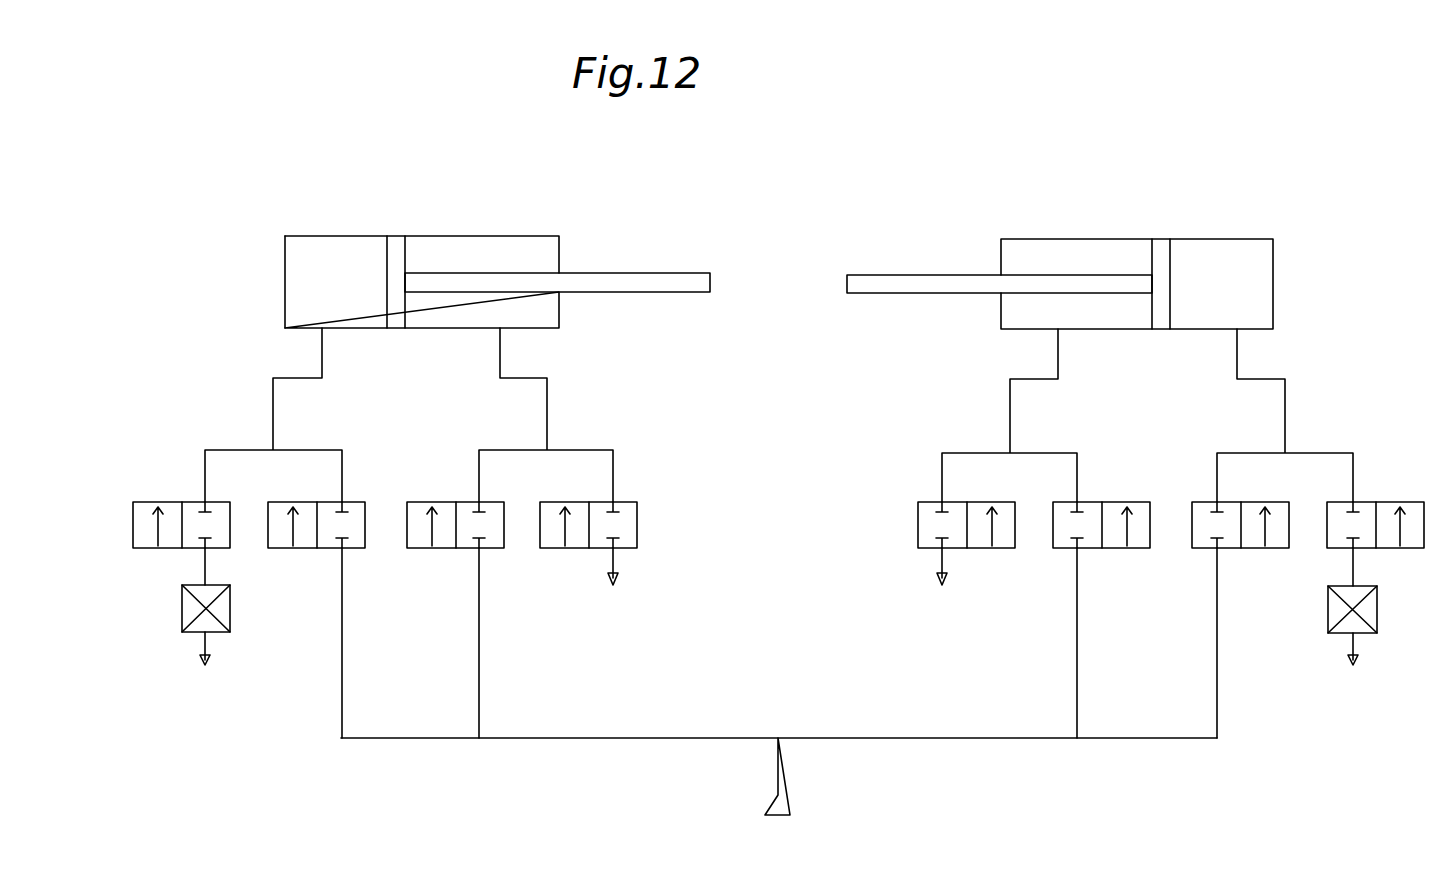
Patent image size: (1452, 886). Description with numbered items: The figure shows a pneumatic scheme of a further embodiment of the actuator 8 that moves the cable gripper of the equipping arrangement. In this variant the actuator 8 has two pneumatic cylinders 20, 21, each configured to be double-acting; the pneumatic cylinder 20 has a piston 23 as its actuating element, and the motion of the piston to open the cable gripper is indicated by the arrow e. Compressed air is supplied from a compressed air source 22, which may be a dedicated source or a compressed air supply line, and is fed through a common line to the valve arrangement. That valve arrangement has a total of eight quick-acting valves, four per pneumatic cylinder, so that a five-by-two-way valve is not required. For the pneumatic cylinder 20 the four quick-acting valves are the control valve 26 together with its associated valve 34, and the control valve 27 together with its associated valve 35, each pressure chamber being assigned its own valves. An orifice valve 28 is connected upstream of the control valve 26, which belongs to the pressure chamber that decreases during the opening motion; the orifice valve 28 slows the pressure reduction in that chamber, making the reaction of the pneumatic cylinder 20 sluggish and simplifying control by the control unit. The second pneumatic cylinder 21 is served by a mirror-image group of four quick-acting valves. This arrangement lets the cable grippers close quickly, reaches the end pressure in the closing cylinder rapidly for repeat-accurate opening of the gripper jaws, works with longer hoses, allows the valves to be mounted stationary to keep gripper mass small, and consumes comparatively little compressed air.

The pneumatic actuator 8 is at (450, 128).
The pneumatic cylinder 20 is at (362, 236).
The pneumatic cylinder 21 is at (1092, 239).
The compressed air source 22 is at (790, 805).
The piston 23 is at (403, 250).
The control valve 26 is at (133, 545).
The control valve 27 is at (424, 540).
The orifice valve 28 is at (182, 627).
The quick-acting valve 34 is at (291, 549).
The quick-acting valve 35 is at (630, 538).